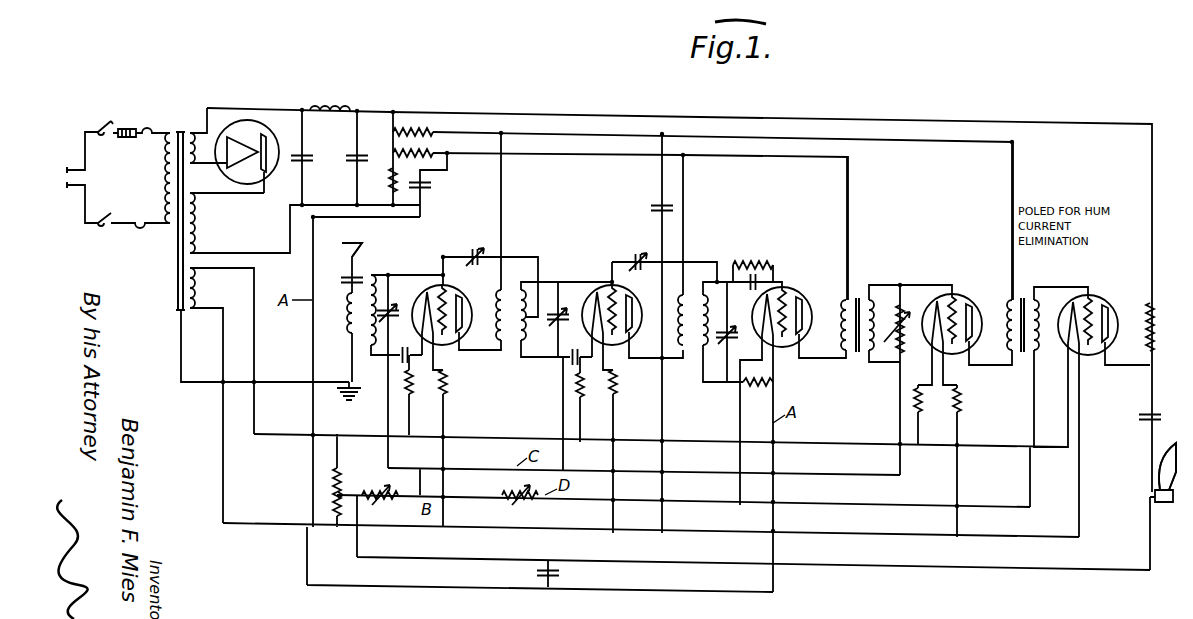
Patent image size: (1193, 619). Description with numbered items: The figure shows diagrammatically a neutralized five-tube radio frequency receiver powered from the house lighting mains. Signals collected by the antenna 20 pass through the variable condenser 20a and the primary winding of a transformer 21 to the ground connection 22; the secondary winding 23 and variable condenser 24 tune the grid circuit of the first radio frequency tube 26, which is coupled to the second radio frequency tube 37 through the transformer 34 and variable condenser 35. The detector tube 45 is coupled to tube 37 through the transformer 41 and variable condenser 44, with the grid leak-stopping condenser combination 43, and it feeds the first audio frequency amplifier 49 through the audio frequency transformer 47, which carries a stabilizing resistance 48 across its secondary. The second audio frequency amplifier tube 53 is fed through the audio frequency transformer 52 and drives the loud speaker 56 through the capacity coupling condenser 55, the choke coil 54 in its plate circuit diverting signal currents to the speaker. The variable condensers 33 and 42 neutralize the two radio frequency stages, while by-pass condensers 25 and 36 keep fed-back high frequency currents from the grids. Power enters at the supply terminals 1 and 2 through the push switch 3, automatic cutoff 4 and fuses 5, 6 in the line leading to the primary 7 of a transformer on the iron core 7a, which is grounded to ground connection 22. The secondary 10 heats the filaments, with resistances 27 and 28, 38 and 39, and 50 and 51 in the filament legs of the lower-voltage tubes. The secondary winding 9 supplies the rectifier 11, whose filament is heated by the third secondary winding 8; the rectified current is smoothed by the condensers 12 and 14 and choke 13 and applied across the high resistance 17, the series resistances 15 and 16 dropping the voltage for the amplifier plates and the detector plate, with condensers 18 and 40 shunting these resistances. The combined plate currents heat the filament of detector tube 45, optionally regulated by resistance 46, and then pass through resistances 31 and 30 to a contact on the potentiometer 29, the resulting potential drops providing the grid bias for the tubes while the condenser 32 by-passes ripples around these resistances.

The supply terminal 1 is at (58, 187).
The supply terminal 2 is at (58, 168).
The push switch 3 is at (105, 225).
The automatic cutoff 4 is at (108, 121).
The fuses 5 is at (148, 130).
The fuse 6 is at (142, 230).
The primary 7 is at (166, 180).
The iron core 7a is at (181, 130).
The third secondary winding 8 is at (200, 166).
The secondary winding 9 is at (202, 220).
The secondary 10 is at (199, 289).
The rectifier 11 is at (264, 130).
The condenser 12 is at (304, 162).
The choke 13 is at (327, 118).
The condenser 14 is at (356, 162).
The series resistance 15 is at (415, 130).
The series resistance 16 is at (428, 151).
The high resistance 17 is at (389, 182).
The condenser 18 is at (432, 187).
The antenna 20 is at (363, 244).
The variable condenser 20a is at (357, 278).
The primary winding of a transformer 21 is at (347, 315).
The ground connection 22 is at (354, 400).
The secondary winding 23 is at (380, 278).
The variable condenser 24 is at (391, 311).
The by-pass condenser 25 is at (405, 347).
The vacuum tube 26 is at (466, 294).
The resistance 27 is at (412, 386).
The resistance 28 is at (446, 387).
The potentiometer 29 is at (354, 486).
The resistance 30 is at (380, 502).
The resistance 31 is at (532, 500).
The condenser 32 is at (561, 575).
The variable condenser 33 is at (474, 248).
The transformer 34 is at (519, 346).
The variable condenser 35 is at (553, 322).
The by-pass condenser 36 is at (570, 362).
The vacuum tube 37 is at (620, 348).
The resistance 38 is at (575, 384).
The resistance 39 is at (618, 385).
The condenser 40 is at (658, 206).
The transformer 41 is at (690, 355).
The variable condenser 42 is at (637, 252).
The grid leak-stopping condenser combination 43 is at (748, 263).
The variable condenser 44 is at (725, 342).
The detector tube 45 is at (801, 291).
The resistance 46 is at (753, 386).
The audio frequency transformer 47 is at (861, 356).
The resistance 48 is at (894, 298).
The first audio frequency amplifier 49 is at (961, 293).
The resistance 50 is at (920, 396).
The resistance 51 is at (960, 388).
The audio frequency transformer 52 is at (1025, 300).
The second audio frequency amplifier tube 53 is at (1099, 296).
The choke coil 54 is at (1154, 310).
The capacity coupling condenser 55 is at (1142, 420).
The loud speaker 56 is at (1159, 502).